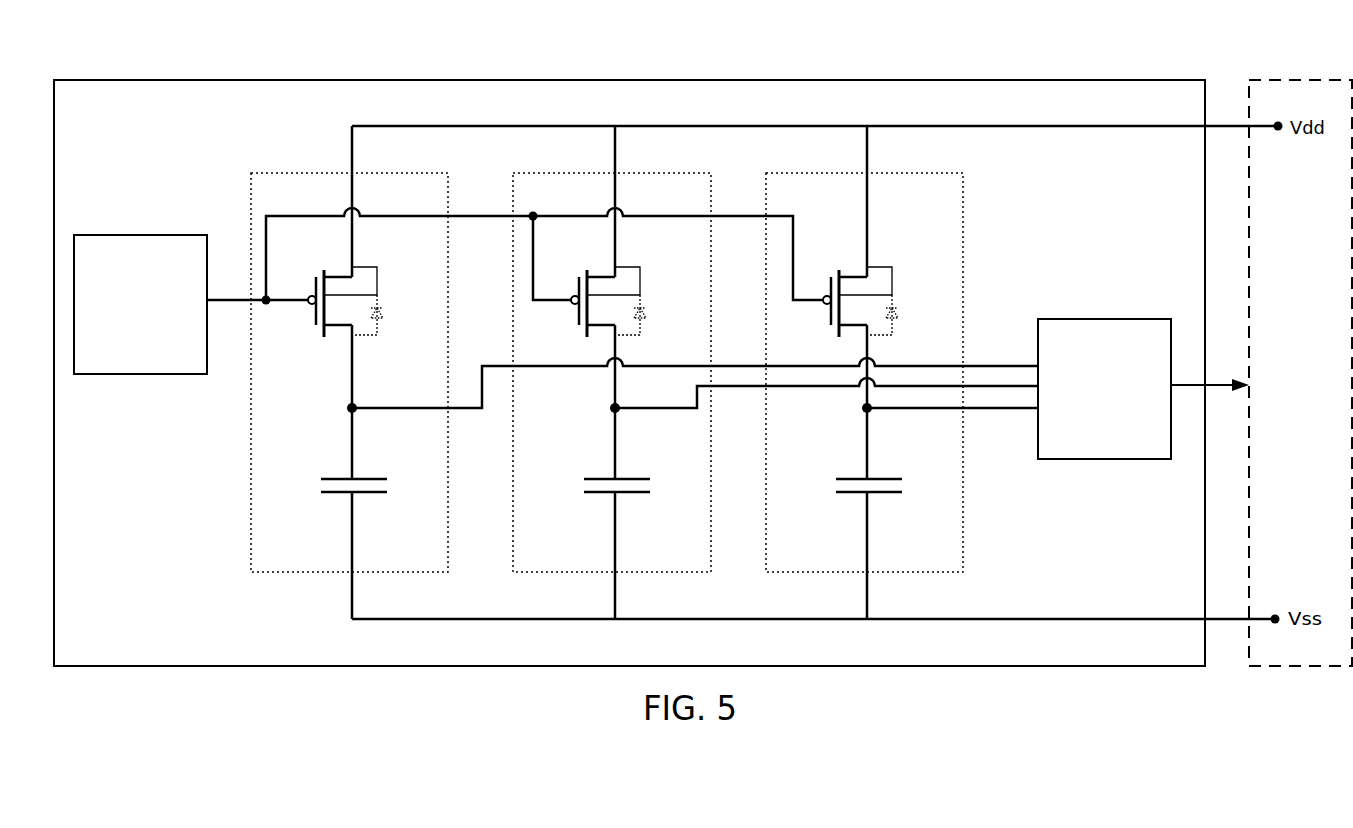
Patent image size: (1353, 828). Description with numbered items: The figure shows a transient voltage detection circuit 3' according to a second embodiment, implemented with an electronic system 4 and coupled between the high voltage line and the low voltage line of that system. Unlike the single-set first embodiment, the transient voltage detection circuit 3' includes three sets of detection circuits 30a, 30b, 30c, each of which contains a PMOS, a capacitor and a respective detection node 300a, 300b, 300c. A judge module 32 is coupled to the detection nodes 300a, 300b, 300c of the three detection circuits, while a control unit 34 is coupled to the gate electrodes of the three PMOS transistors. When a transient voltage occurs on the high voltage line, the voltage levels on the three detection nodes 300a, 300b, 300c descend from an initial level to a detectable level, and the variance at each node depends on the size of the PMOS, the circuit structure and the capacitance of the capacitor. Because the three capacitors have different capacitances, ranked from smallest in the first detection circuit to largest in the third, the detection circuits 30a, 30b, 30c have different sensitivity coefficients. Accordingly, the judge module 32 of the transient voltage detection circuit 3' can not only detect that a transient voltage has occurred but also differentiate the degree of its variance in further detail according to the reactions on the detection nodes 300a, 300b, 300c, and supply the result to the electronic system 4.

The transient voltage detection circuit 3' is at (629, 339).
The electronic system 4 is at (1290, 80).
The detection circuit 30a is at (251, 196).
The detection circuit 30b is at (513, 198).
The detection circuit 30c is at (766, 198).
The judge module 32 is at (1092, 319).
The control unit 34 is at (168, 374).
The detection node 300a is at (349, 410).
The detection node 300b is at (612, 410).
The detection node 300c is at (864, 410).